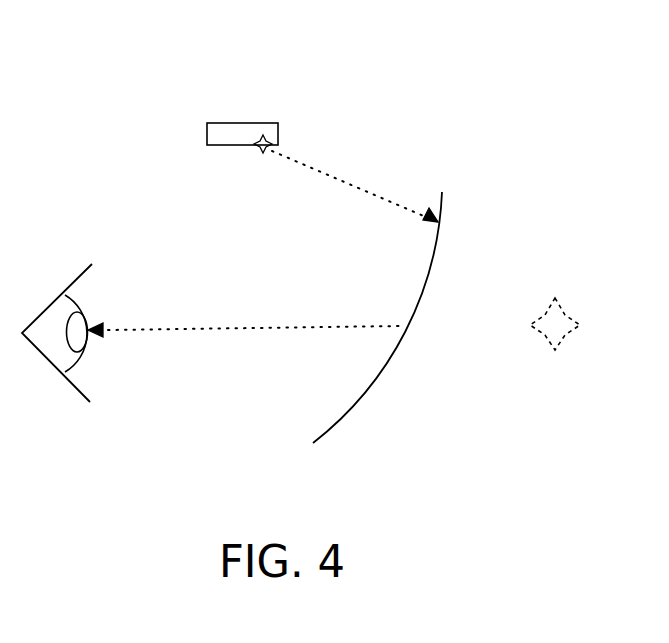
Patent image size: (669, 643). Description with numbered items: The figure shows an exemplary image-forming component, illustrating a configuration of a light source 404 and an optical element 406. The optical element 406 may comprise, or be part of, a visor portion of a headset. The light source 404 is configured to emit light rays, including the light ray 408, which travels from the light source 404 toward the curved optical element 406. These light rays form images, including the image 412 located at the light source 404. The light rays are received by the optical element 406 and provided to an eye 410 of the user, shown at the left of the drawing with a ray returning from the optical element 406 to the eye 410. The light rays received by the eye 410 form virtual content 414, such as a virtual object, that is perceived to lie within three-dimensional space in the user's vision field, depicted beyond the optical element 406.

The light source 404 is at (247, 123).
The optical element 406 is at (360, 398).
The light ray 408 is at (338, 180).
The eye 410 is at (82, 312).
The image 412 is at (262, 150).
The virtual content 414 is at (552, 312).